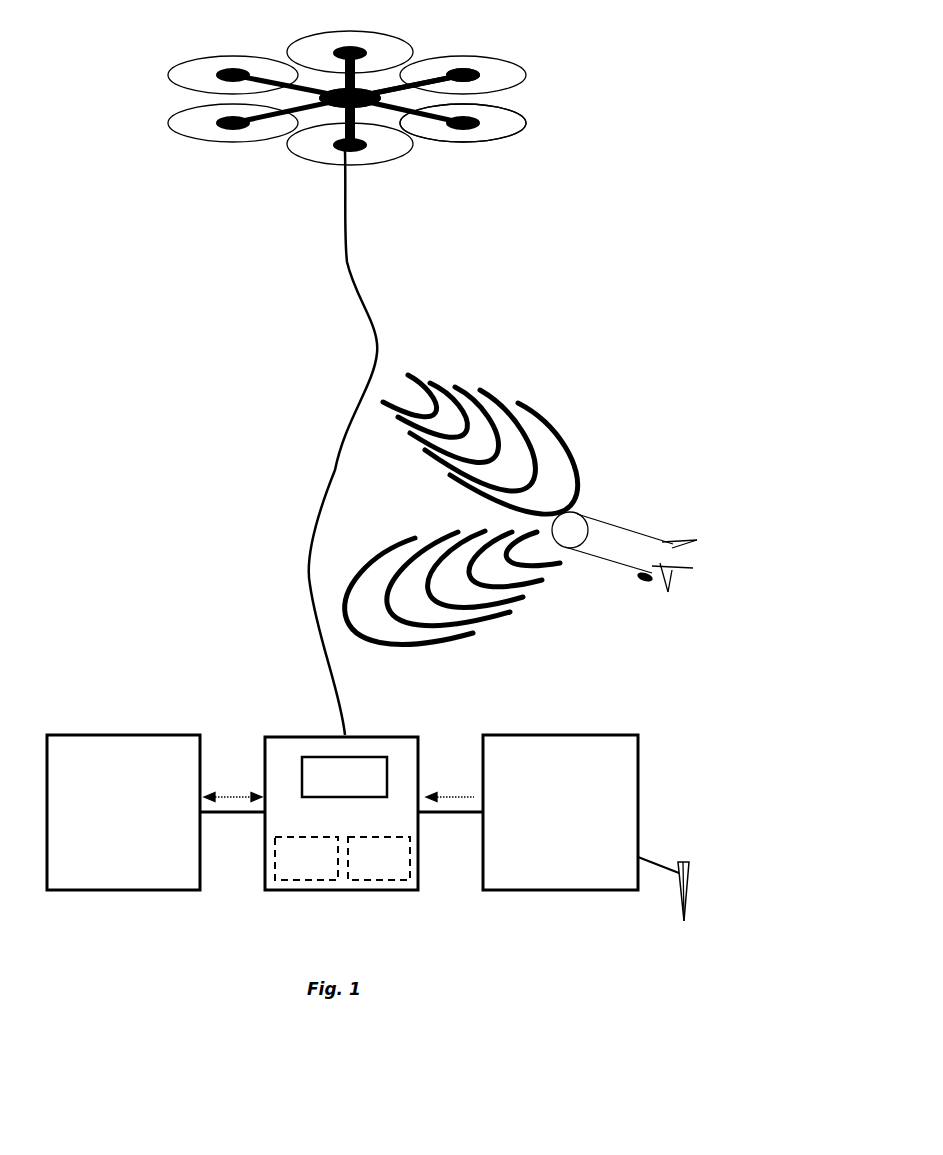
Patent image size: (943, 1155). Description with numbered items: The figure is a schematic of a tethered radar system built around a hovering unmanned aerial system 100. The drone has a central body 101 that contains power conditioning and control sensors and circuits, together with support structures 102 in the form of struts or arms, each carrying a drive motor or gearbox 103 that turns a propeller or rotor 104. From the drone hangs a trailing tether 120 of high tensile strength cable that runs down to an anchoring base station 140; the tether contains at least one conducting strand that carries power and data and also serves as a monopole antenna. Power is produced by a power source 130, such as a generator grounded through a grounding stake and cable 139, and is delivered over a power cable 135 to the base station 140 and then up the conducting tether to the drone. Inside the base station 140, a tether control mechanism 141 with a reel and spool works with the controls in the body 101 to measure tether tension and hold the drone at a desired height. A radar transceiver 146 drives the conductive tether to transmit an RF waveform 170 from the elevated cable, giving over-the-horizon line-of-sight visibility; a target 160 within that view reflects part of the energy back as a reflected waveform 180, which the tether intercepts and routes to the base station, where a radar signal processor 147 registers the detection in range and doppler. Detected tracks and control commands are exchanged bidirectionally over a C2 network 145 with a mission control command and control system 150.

The unmanned aerial system 100 is at (158, 32).
The central body 101 is at (333, 80).
The support structure 102 is at (388, 80).
The drive motor or gearbox 103 is at (485, 72).
The propeller or rotor 104 is at (532, 123).
The tether 120 is at (356, 442).
The power source 130 is at (583, 824).
The power cable 135 is at (450, 823).
The antenna 139 is at (672, 886).
The base station 140 is at (365, 824).
The tether control mechanism 141 is at (366, 785).
The C2 network 145 is at (232, 823).
The radar transceiver 146 is at (329, 868).
The radar signal processor 147 is at (402, 868).
The mission control command and control system 150 is at (143, 824).
The target 160 is at (629, 530).
The transmitted RF waveform 170 is at (480, 433).
The reflected waveform 180 is at (452, 599).